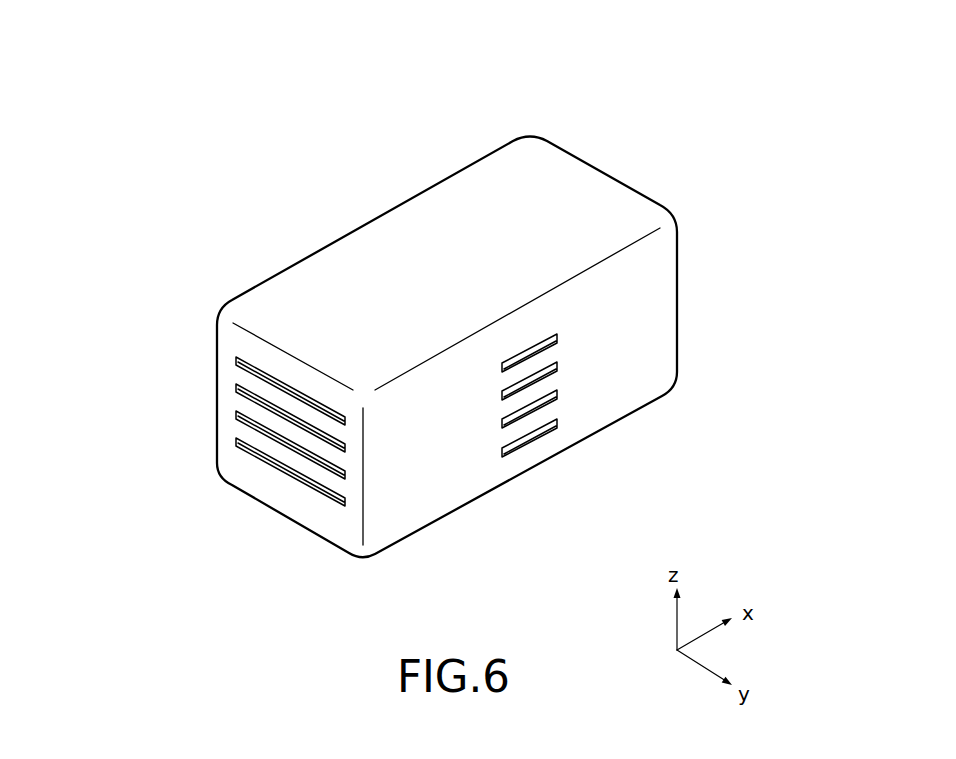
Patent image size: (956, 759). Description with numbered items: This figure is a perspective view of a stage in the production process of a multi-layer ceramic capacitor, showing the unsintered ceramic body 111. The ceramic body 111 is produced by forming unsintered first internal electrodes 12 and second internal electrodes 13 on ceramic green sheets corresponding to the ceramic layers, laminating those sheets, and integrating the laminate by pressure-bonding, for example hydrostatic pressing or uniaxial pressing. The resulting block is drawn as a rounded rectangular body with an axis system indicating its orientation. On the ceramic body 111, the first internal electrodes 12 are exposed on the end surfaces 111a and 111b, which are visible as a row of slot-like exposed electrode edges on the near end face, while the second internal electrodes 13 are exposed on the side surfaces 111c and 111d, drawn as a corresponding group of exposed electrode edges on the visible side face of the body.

The unsintered ceramic body 111 is at (595, 100).
The end surface 111a is at (217, 404).
The end surface 111b is at (682, 278).
The side surface 111c is at (300, 263).
The side surface 111d is at (600, 384).
The first internal electrodes 12 is at (293, 396).
The second internal electrodes 13 is at (540, 352).